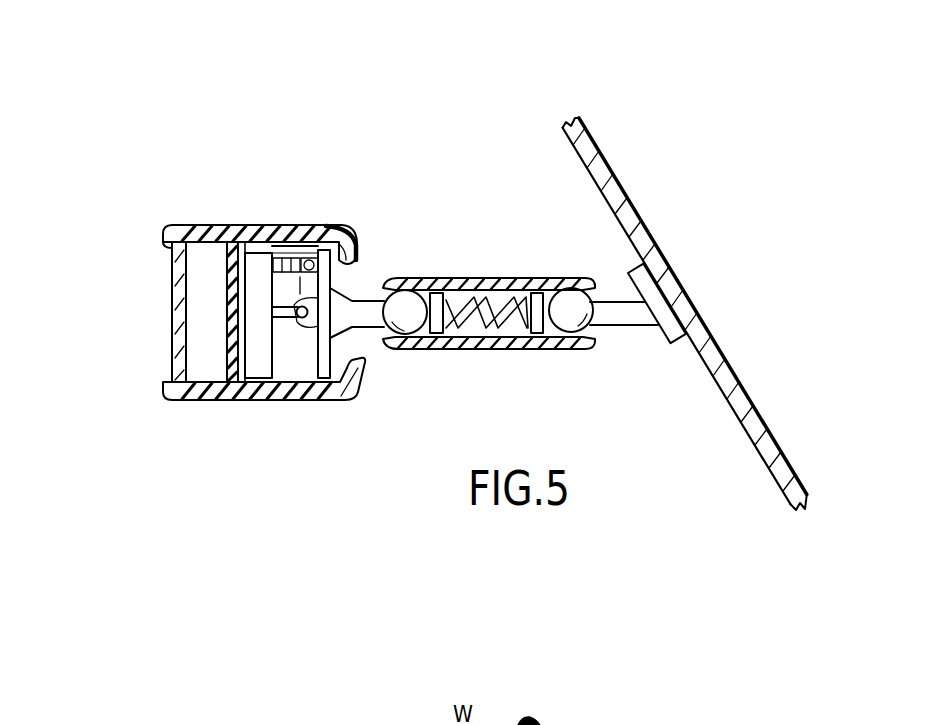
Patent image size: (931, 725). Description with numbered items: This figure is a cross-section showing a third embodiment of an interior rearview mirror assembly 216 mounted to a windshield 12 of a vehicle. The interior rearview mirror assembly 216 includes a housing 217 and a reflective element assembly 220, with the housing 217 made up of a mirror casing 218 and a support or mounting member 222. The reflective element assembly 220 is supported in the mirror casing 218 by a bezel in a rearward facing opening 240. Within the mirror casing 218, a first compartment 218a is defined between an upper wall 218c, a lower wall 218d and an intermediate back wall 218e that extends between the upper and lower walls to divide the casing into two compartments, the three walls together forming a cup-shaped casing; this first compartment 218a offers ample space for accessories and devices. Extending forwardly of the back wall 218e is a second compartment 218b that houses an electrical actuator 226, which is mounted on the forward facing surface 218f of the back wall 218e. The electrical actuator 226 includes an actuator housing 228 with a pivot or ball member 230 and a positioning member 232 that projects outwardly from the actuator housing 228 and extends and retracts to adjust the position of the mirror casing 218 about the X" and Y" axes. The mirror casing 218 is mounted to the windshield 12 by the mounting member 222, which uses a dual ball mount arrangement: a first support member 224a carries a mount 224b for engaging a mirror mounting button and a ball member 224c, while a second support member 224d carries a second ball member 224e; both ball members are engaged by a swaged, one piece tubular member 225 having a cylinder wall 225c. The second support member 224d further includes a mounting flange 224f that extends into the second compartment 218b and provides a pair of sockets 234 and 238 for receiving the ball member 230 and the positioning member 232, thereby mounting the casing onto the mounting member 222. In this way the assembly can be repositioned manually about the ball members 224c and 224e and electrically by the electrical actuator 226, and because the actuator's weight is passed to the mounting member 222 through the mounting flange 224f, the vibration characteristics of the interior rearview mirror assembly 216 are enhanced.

The windshield 12 is at (575, 158).
The interior rearview mirror assembly 216 is at (397, 115).
The housing 217 is at (209, 200).
The mirror casing 218 is at (279, 224).
The first compartment 218a is at (207, 375).
The second compartment 218b is at (292, 368).
The upper wall 218c is at (185, 227).
The lower wall 218d is at (178, 402).
The back wall 218e is at (229, 298).
The forward facing surface 218f is at (247, 243).
The reflective element assembly 220 is at (160, 313).
The mounting member 222 is at (582, 365).
The first support member 224a is at (616, 302).
The mount 224b is at (652, 298).
The ball member 224c is at (576, 302).
The second support member 224d is at (408, 320).
The second ball member 224e is at (440, 333).
The mounting flange 224f is at (331, 289).
The tubular member 225 is at (552, 268).
The cylinder wall 225c is at (507, 285).
The electrical actuator 226 is at (309, 258).
The actuator housing 228 is at (230, 335).
The ball member 230 is at (303, 326).
The positioning member 232 is at (302, 232).
The socket 234 is at (297, 362).
The socket 238 is at (324, 228).
The rearward facing opening 240 is at (162, 240).